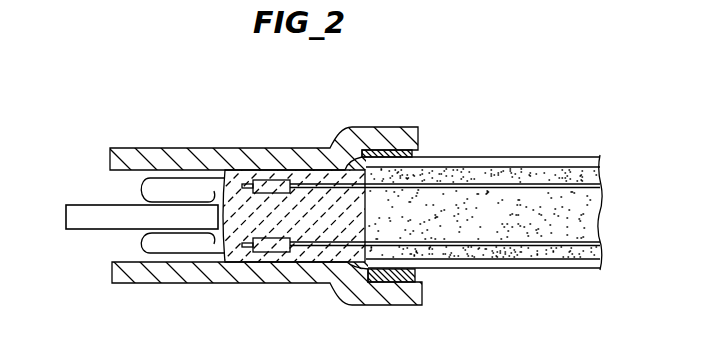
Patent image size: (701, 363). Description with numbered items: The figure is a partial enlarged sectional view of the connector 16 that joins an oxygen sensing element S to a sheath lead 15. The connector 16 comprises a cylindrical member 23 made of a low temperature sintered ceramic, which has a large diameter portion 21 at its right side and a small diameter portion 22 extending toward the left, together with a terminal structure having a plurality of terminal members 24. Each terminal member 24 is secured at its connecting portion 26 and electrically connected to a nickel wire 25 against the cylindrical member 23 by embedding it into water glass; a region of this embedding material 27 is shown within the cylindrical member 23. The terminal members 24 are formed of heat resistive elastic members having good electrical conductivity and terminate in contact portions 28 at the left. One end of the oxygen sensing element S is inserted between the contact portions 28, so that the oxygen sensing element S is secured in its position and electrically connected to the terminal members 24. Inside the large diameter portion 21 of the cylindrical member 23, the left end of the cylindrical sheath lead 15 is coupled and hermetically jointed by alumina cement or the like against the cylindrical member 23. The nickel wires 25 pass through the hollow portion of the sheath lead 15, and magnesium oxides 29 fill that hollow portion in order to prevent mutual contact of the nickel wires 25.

The sheath lead 15 is at (505, 157).
The connector 16 is at (252, 218).
The large diameter portion 21 is at (413, 133).
The small diameter portion 22 is at (130, 152).
The cylindrical member 23 is at (252, 275).
The terminal member 24 is at (286, 218).
The nickel wire 25 is at (547, 180).
The connecting portion 26 is at (278, 185).
The potting compound 27 is at (315, 222).
The contact portion 28 is at (157, 180).
The magnesium oxides 29 is at (512, 223).
The oxygen sensing element S is at (84, 205).